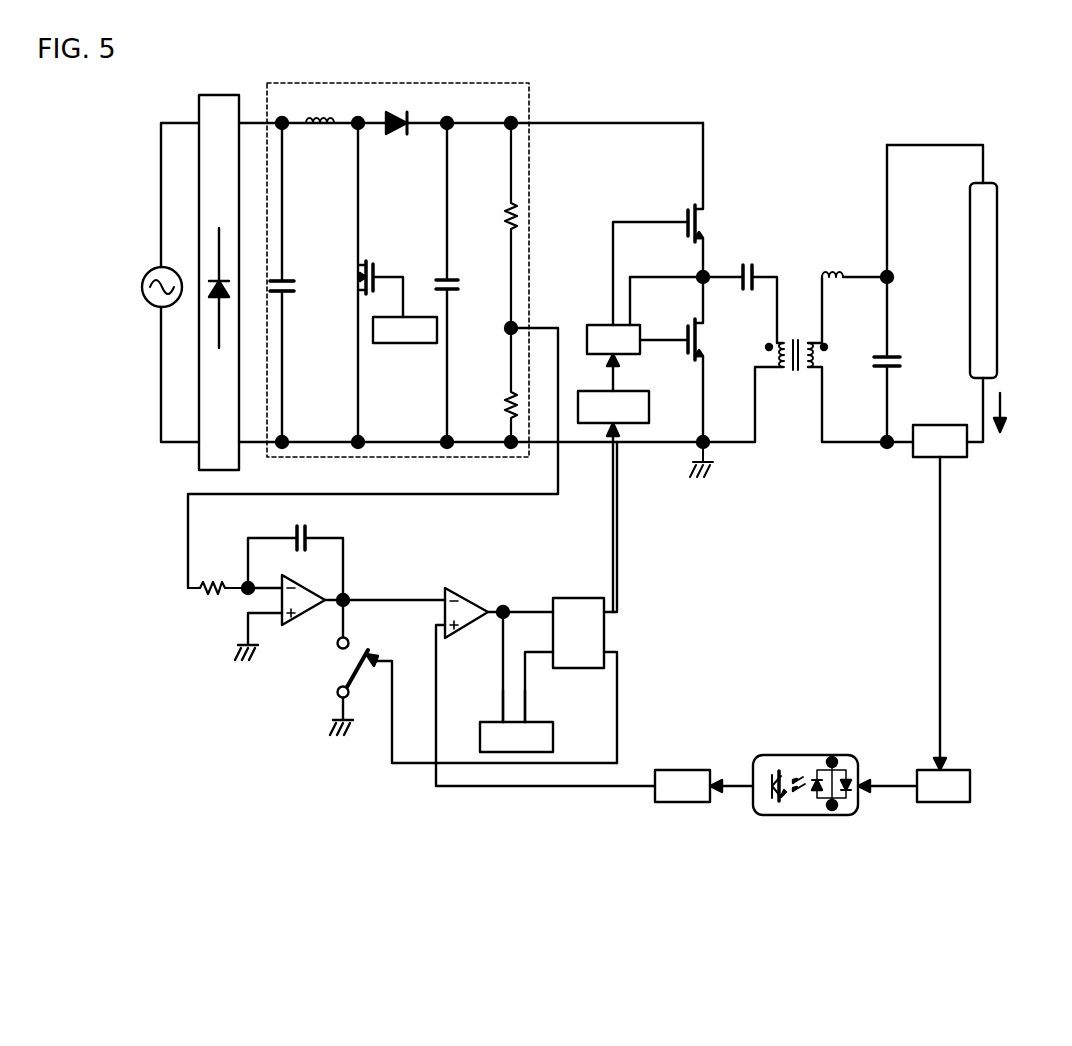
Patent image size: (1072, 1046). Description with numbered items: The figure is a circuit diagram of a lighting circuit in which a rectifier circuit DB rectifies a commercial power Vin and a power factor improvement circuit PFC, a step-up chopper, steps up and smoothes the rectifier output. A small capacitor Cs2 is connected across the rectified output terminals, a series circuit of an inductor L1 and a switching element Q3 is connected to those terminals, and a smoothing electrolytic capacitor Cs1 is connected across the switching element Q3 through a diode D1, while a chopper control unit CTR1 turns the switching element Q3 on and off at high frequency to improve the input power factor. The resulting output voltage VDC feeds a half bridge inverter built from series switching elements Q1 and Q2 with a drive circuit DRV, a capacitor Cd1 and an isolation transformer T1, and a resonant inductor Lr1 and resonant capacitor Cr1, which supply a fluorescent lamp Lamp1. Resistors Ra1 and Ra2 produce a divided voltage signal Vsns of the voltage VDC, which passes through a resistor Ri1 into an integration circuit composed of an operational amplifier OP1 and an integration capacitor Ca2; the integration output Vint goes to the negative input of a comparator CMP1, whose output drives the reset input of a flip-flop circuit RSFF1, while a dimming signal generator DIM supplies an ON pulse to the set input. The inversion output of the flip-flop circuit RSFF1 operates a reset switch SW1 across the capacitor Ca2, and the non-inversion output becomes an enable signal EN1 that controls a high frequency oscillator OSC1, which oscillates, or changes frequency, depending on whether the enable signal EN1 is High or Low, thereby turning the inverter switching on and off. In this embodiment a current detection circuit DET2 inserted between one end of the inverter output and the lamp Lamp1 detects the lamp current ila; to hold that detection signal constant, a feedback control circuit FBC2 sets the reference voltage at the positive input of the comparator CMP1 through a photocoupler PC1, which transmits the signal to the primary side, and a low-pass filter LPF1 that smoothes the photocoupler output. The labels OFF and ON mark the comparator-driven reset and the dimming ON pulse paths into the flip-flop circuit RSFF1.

The commercial power Vin is at (142, 287).
The rectifier circuit DB is at (218, 270).
The power factor improvement circuit PFC is at (398, 258).
The inductor L1 is at (320, 107).
The diode D1 is at (398, 113).
The output voltage VDC is at (513, 120).
The capacitor Cs2 is at (295, 282).
The switching element Q3 is at (366, 282).
The chopper control unit CTR1 is at (405, 330).
The electrolytic capacitor Cs1 is at (460, 282).
The resistor Ra1 is at (495, 225).
The resistor Ra2 is at (495, 385).
The divided voltage signal Vsns is at (381, 447).
The switching element Q1 is at (658, 224).
The switching element Q2 is at (671, 359).
The drive circuit DRV is at (645, 315).
The high frequency oscillator OSC1 is at (613, 388).
The enable signal EN1 is at (630, 517).
The capacitor Cd1 is at (743, 295).
The isolation transformer T1 is at (826, 359).
The resonant inductor Lr1 is at (854, 262).
The resonant capacitor Cr1 is at (904, 293).
The fluorescent lamp Lamp1 is at (971, 293).
The lamp current ila is at (1011, 412).
The current detection circuit DET2 is at (927, 597).
The feedback control circuit FBC2 is at (914, 786).
The photocoupler PC1 is at (784, 773).
The low-pass filter LPF1 is at (573, 713).
The operational amplifier OP1 is at (280, 608).
The resistor Ri1 is at (218, 598).
The integration capacitor Ca2 is at (295, 553).
The output of the integration circuit Vint is at (350, 590).
The reset switch SW1 is at (453, 681).
The comparator CMP1 is at (495, 601).
The flip-flop circuit RSFF1 is at (582, 602).
The dimming signal generator DIM is at (516, 682).
The off signal OFF is at (479, 706).
The on signal ON is at (544, 706).